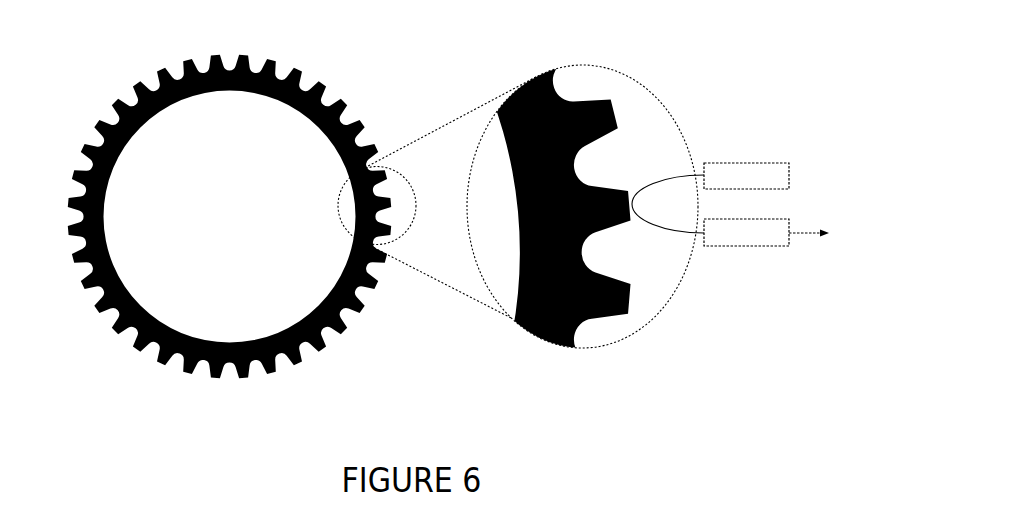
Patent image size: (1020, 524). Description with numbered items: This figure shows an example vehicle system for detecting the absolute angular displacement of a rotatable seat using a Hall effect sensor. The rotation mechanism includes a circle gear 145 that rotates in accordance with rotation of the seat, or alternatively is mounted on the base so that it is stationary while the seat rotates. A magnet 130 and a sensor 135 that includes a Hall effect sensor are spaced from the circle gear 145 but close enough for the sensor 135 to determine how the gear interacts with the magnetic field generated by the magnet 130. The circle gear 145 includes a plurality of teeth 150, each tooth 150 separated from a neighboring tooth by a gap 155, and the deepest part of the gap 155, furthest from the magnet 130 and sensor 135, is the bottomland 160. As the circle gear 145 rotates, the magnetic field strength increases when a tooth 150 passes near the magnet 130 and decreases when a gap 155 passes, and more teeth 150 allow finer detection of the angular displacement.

The circle gear 145 is at (246, 54).
The tooth 150 is at (619, 111).
The gap 155 is at (621, 166).
The bottomland 160 is at (582, 167).
The magnet 130 is at (789, 177).
The sensor 135 is at (789, 233).